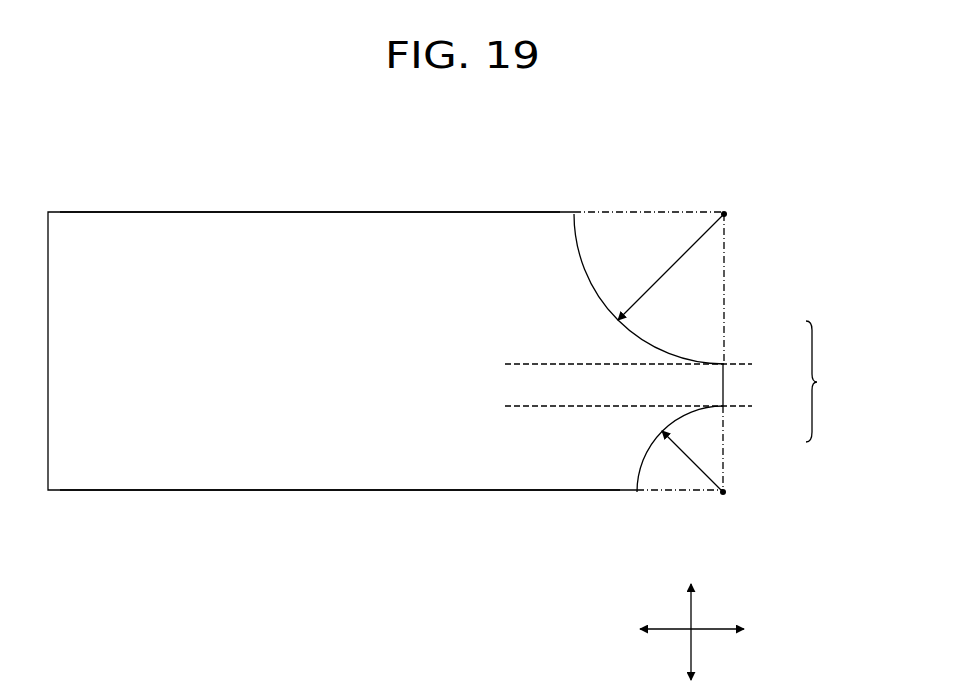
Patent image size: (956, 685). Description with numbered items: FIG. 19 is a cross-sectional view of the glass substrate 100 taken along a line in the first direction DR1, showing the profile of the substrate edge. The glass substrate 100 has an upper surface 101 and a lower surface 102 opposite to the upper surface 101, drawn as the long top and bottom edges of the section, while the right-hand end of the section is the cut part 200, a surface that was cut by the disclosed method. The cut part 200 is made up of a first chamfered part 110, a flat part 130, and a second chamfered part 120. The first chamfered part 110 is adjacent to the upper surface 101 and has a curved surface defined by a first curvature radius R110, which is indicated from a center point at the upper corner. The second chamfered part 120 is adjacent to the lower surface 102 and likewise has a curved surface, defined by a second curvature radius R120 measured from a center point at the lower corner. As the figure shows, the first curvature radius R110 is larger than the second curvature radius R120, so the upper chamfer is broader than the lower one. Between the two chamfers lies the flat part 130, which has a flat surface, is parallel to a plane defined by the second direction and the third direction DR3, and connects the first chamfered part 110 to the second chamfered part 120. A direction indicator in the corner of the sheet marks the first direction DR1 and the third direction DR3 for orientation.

The glass substrate 100 is at (78, 160).
The upper surface 101 is at (372, 211).
The lower surface 102 is at (370, 492).
The first chamfered part 110 is at (632, 330).
The second chamfered part 120 is at (680, 422).
The flat part 130 is at (724, 383).
The cut part 200 is at (832, 381).
The first curvature radius R110 is at (672, 265).
The second curvature radius R120 is at (685, 463).
The first direction DR1 is at (714, 632).
The third direction DR3 is at (691, 614).